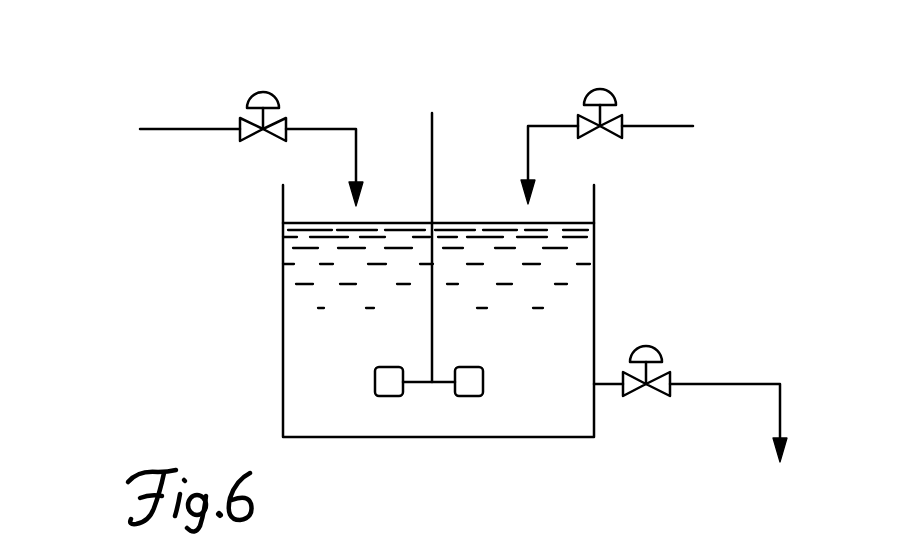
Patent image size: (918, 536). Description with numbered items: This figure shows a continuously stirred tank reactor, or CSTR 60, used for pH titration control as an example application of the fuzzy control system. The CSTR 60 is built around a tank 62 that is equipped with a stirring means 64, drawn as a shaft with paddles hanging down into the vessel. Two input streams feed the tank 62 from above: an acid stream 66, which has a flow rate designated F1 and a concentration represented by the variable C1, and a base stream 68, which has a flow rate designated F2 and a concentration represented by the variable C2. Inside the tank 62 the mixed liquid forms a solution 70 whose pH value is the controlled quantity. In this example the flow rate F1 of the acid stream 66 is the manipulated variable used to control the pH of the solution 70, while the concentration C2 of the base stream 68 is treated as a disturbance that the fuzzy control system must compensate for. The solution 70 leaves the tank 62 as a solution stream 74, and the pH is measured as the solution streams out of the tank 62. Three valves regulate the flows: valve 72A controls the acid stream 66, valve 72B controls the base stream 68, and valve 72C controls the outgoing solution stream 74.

The continuously stirred tank reactor 60 is at (752, 222).
The tank 62 is at (283, 342).
The stirring means 64 is at (432, 132).
The acid stream 66 is at (150, 130).
The base stream 68 is at (668, 127).
The solution 70 is at (573, 278).
The valve 72A is at (272, 98).
The valve 72B is at (598, 87).
The valve 72C is at (656, 347).
The solution stream 74 is at (708, 384).